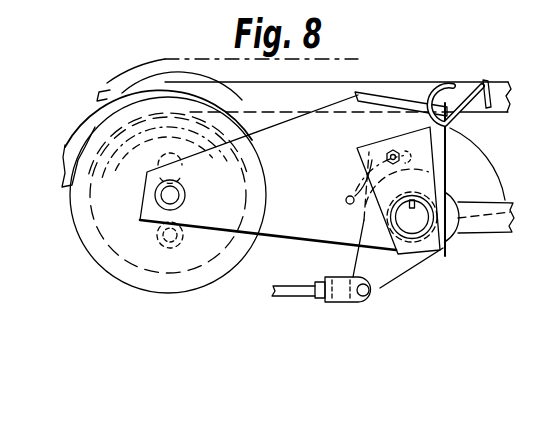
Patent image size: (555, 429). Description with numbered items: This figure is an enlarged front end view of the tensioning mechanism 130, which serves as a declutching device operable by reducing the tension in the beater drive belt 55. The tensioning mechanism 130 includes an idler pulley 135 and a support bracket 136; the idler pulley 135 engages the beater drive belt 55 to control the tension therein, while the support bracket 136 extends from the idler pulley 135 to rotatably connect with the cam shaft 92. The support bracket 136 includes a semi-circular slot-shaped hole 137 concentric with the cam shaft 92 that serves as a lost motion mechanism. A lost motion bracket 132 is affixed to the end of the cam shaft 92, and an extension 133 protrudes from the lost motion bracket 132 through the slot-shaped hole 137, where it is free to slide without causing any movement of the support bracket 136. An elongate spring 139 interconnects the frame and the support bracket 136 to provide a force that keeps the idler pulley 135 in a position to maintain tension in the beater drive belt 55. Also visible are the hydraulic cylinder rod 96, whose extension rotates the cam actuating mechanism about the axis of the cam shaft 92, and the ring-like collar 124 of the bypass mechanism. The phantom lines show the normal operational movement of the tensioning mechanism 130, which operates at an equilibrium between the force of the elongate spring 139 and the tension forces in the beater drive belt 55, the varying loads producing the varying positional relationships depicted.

The beater drive belt 55 is at (384, 82).
The cam shaft 92 is at (412, 217).
The hydraulic cylinder rod 96 is at (310, 300).
The collar 124 is at (401, 289).
The tensioning mechanism 130 is at (232, 331).
The lost motion bracket 132 is at (428, 158).
The extension 133 is at (391, 153).
The idler pulley 135 is at (150, 292).
The support bracket 136 is at (258, 192).
The slot-shaped hole 137 is at (347, 193).
The elongate spring 139 is at (483, 81).